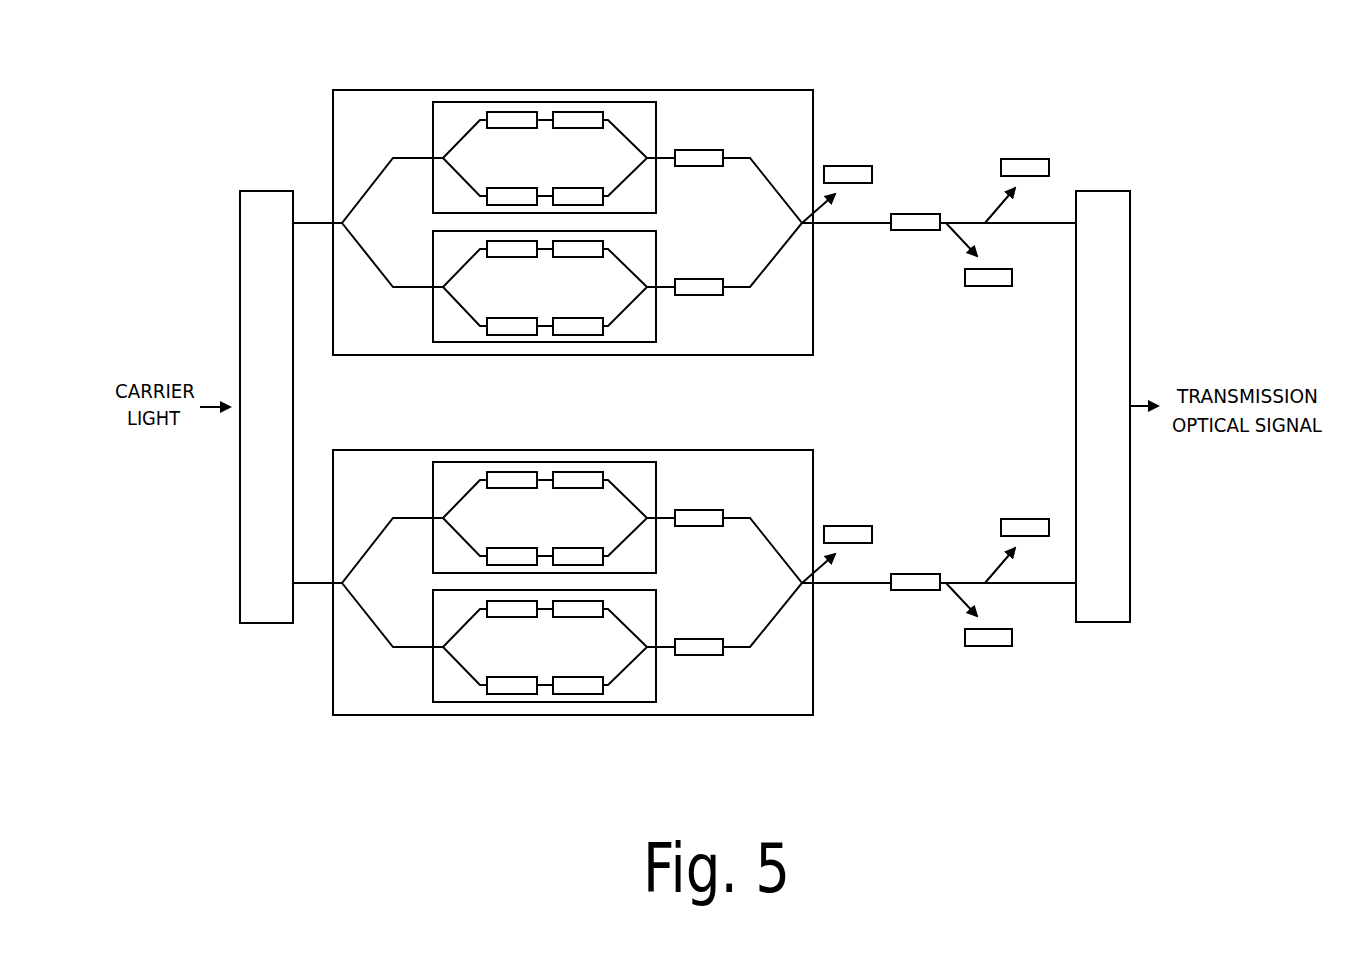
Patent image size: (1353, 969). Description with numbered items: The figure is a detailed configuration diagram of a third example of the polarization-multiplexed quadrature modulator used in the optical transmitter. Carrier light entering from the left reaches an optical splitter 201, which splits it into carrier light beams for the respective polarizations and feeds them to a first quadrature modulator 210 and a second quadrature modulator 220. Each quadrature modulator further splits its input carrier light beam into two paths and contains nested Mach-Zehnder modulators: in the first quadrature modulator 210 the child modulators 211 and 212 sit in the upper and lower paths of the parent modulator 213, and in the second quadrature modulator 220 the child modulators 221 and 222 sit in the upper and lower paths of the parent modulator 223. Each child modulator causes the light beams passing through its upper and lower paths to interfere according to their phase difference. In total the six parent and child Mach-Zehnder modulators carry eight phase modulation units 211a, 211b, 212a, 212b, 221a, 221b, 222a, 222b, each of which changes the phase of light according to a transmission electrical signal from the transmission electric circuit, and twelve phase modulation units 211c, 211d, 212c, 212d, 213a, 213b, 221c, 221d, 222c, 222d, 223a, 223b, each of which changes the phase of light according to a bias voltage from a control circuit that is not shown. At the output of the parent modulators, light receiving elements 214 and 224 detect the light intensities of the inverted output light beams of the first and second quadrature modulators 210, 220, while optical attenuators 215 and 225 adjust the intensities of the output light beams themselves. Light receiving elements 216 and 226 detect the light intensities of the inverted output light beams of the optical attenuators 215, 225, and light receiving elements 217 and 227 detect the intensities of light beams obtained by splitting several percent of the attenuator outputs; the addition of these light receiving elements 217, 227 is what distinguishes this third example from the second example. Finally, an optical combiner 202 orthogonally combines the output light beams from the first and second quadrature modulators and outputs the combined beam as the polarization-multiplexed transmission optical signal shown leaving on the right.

The optical splitter 201 is at (268, 191).
The optical combiner 202 is at (1100, 191).
The first quadrature modulator 210 is at (364, 90).
The Mach-Zehnder modulator (child modulator) 211 is at (456, 102).
The phase modulation unit 211a is at (515, 112).
The phase modulation unit 211b is at (515, 188).
The phase modulation unit 211c is at (581, 112).
The phase modulation unit 211d is at (581, 188).
The Mach-Zehnder modulator (child modulator) 212 is at (450, 343).
The phase modulation unit 212a is at (512, 258).
The phase modulation unit 212b is at (512, 336).
The phase modulation unit 212c is at (578, 258).
The phase modulation unit 212d is at (578, 336).
The Mach-Zehnder modulator (parent modulator) 213 is at (780, 248).
The phase modulation unit 213a is at (700, 150).
The phase modulation unit 213b is at (700, 279).
The light receiving element 214 is at (849, 166).
The optical attenuator 215 is at (915, 214).
The light receiving element 216 is at (988, 288).
The light receiving element 217 is at (1025, 159).
The second quadrature modulator 220 is at (364, 450).
The Mach-Zehnder modulator (child modulator) 221 is at (456, 462).
The phase modulation unit 221a is at (515, 472).
The phase modulation unit 221b is at (515, 548).
The phase modulation unit 221c is at (581, 472).
The phase modulation unit 221d is at (581, 548).
The Mach-Zehnder modulator (child modulator) 222 is at (450, 703).
The phase modulation unit 222a is at (512, 618).
The phase modulation unit 222b is at (512, 695).
The phase modulation unit 222c is at (578, 618).
The phase modulation unit 222d is at (578, 695).
The Mach-Zehnder modulator (parent modulator) 223 is at (780, 608).
The phase modulation unit 223a is at (700, 510).
The phase modulation unit 223b is at (700, 639).
The light receiving element 224 is at (849, 526).
The optical attenuator 225 is at (915, 574).
The light receiving element 226 is at (988, 648).
The light receiving element 227 is at (1025, 519).